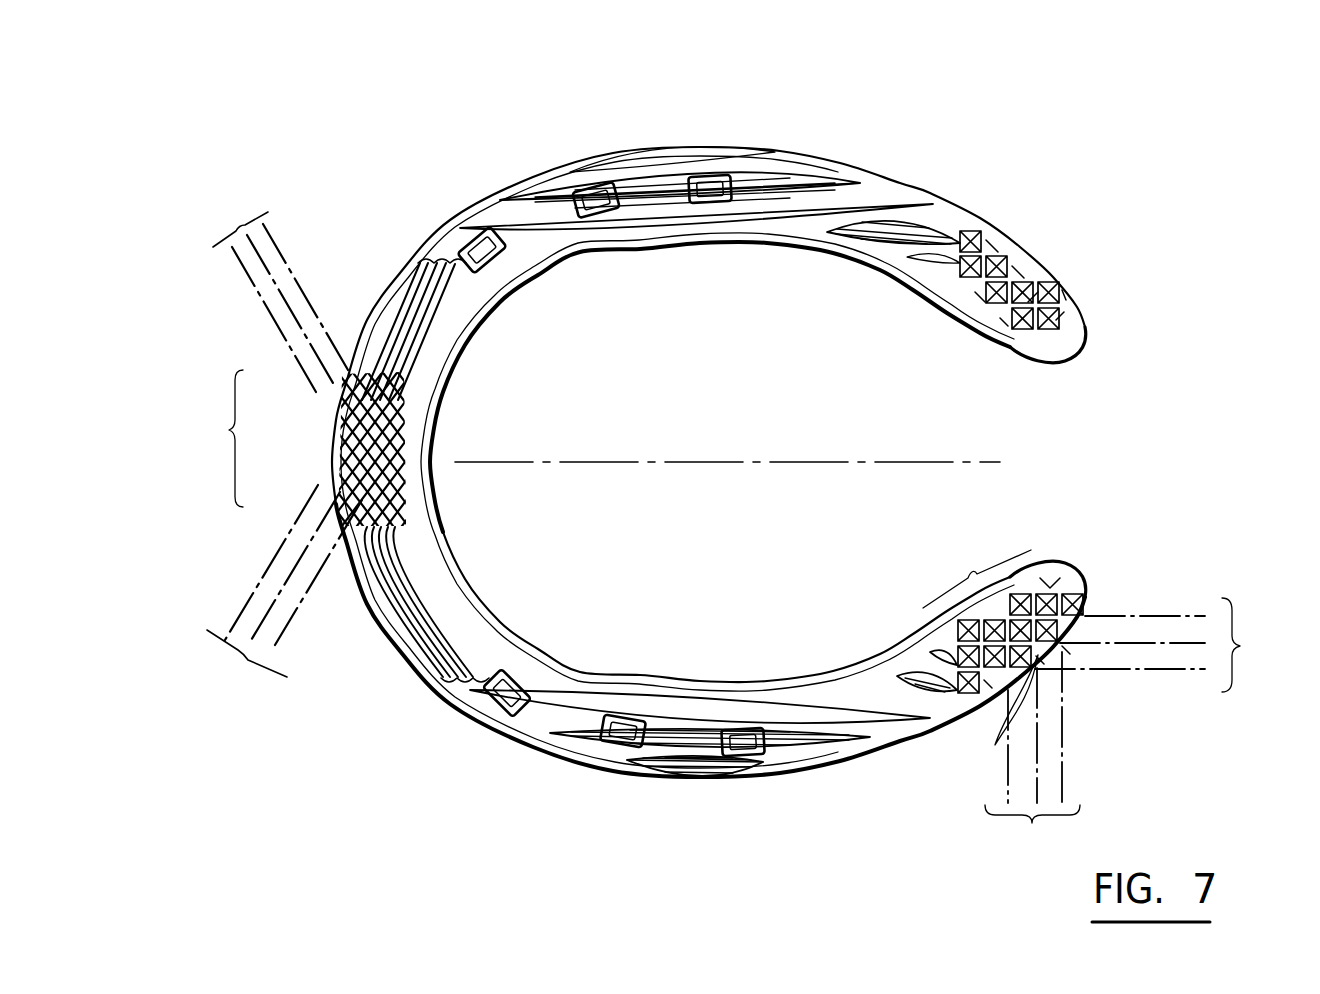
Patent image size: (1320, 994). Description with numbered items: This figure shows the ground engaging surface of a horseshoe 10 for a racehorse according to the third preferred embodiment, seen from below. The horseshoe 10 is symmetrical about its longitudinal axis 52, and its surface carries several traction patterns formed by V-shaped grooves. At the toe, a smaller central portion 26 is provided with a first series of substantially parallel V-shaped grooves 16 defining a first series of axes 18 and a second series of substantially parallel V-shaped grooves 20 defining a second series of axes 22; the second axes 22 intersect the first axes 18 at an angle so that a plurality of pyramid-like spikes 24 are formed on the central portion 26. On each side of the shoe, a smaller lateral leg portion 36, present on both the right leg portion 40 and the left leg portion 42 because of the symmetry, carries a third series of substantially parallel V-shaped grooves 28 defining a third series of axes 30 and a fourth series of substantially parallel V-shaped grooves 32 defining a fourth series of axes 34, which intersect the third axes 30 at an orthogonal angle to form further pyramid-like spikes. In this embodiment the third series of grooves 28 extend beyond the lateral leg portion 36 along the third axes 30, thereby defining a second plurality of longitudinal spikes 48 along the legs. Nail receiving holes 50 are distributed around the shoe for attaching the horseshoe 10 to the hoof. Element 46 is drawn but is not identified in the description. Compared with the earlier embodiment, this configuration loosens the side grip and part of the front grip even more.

The horseshoe 10 is at (438, 114).
The first series of substantially parallel V-shaped grooves 16 is at (300, 392).
The first series of axes 18 is at (276, 291).
The second series of substantially parallel V-shaped grooves 20 is at (300, 480).
The second series of axes 22 is at (283, 594).
The pyramid-like spikes 24 is at (470, 433).
The central portion 26 is at (355, 448).
The third series of substantially parallel V-shaped grooves 28 is at (1112, 567).
The third series of axes 30 is at (1154, 645).
The fourth series of substantially parallel V-shaped grooves 32 is at (999, 708).
The fourth series of axes 34 is at (1032, 751).
The lateral leg portion 36 is at (977, 578).
The right leg portion 40 is at (1053, 586).
The left leg portion 42 is at (1088, 322).
The nail groove 46 is at (430, 581).
The longitudinal spikes 48 is at (703, 733).
The nail receiving holes 50 is at (480, 238).
The longitudinal axis 52 is at (790, 462).